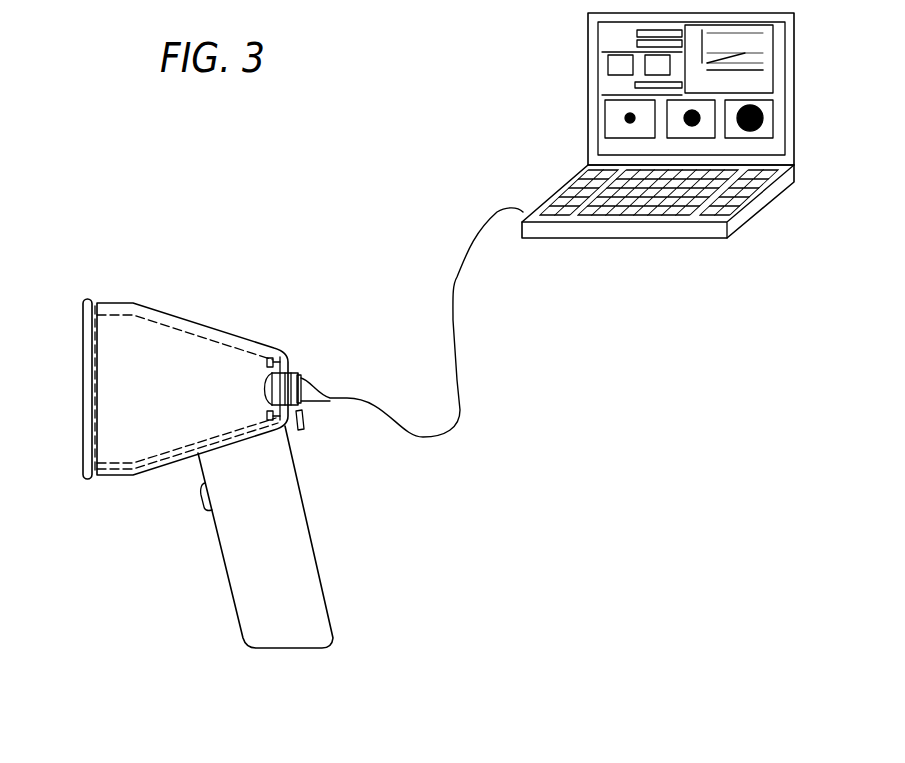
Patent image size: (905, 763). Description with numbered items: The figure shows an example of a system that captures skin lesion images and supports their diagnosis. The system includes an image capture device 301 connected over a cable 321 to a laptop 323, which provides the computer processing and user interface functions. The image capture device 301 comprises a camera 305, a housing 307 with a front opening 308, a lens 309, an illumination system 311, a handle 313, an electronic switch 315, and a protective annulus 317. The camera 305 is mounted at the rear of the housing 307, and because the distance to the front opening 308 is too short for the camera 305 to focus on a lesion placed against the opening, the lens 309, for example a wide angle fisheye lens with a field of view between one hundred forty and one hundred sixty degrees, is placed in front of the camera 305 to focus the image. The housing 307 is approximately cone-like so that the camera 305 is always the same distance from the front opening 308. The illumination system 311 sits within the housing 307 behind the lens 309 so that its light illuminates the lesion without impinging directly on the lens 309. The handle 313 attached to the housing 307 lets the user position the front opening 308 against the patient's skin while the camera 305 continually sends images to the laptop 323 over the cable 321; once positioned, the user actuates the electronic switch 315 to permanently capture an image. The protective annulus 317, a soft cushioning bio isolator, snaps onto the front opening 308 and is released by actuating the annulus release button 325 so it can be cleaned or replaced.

The image capture device 301 is at (218, 248).
The camera 305 is at (305, 378).
The housing 307 is at (170, 313).
The front opening 308 is at (74, 329).
The lens 309 is at (270, 387).
The illumination system 311 is at (268, 357).
The handle 313 is at (318, 568).
The electronic switch 315 is at (203, 497).
The protective annulus 317 is at (86, 455).
The cable 321 is at (453, 321).
The laptop 323 is at (550, 87).
The annulus release button 325 is at (304, 425).